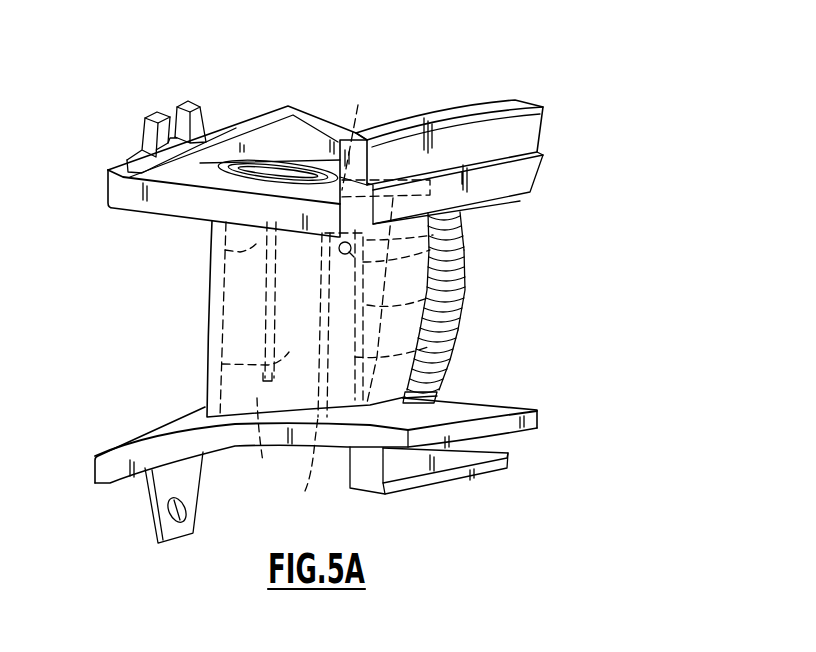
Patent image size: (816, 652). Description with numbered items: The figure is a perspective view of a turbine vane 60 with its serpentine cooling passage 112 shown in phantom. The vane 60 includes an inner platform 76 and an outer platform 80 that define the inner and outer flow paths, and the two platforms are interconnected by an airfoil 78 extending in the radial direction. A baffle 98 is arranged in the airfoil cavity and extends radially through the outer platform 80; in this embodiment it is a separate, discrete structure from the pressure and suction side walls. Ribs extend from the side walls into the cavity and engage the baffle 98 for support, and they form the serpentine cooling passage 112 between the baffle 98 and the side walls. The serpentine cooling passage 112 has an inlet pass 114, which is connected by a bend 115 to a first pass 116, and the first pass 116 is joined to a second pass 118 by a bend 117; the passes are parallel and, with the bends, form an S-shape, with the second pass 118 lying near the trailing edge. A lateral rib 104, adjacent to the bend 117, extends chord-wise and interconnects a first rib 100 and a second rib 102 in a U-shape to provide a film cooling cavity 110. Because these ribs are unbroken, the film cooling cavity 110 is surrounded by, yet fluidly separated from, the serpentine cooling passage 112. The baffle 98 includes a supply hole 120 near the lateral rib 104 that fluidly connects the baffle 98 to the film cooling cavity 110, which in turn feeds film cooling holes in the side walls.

The vane 60 is at (432, 72).
The inner platform 76 is at (107, 470).
The airfoil 78 is at (208, 322).
The outer platform 80 is at (127, 209).
The baffle 98 is at (225, 160).
The first rib 100 is at (305, 491).
The second rib 102 is at (455, 325).
The lateral rib 104 is at (448, 213).
The film cooling cavity 110 is at (343, 392).
The serpentine cooling passage 112 is at (281, 183).
The inlet pass 114 is at (225, 249).
The bend 115 is at (262, 463).
The first pass 116 is at (222, 364).
The bend 117 is at (362, 112).
The second pass 118 is at (458, 277).
The supply hole 120 is at (455, 242).